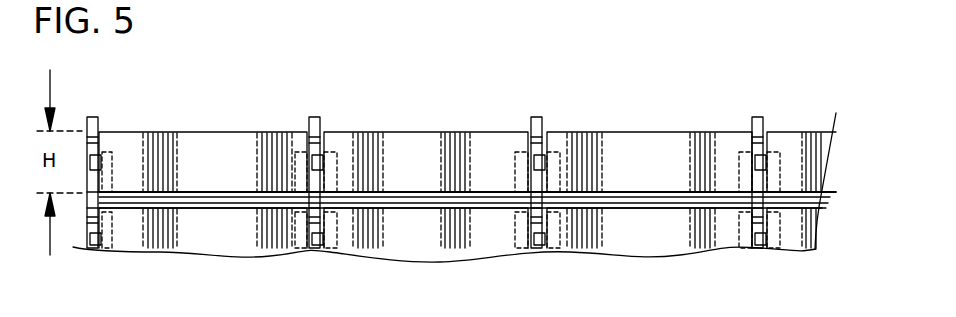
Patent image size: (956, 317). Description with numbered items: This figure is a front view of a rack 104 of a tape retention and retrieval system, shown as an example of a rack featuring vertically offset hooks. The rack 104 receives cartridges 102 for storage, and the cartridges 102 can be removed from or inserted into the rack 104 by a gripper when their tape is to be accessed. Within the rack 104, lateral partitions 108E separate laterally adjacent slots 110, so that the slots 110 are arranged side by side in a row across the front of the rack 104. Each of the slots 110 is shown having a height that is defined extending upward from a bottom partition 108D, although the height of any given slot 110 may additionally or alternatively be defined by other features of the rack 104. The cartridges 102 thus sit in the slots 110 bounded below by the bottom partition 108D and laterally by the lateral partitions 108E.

The cartridge 102 is at (233, 177).
The rack 104 is at (478, 66).
The bottom partition 108D is at (217, 196).
The lateral partition 108E is at (94, 117).
The slot 110 is at (272, 124).